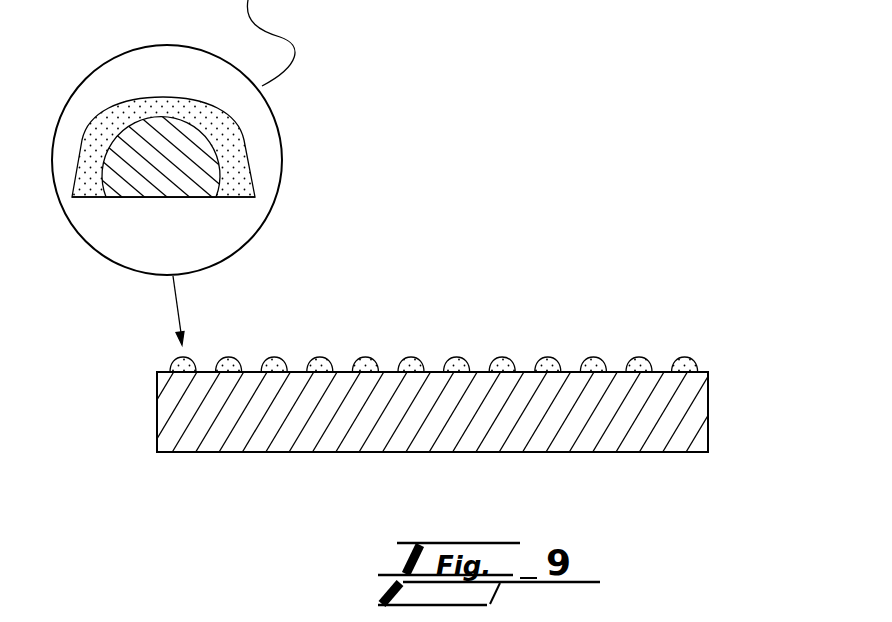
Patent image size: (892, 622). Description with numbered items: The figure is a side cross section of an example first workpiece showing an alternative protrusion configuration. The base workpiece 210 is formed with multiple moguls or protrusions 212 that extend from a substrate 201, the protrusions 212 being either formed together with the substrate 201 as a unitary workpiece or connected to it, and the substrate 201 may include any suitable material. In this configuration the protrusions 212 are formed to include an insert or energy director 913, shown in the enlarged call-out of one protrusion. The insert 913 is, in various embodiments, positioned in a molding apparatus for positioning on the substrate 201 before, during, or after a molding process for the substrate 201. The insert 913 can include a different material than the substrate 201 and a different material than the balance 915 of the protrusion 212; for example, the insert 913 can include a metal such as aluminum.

The substrate 201 is at (708, 405).
The base workpiece 210 is at (399, 287).
The protrusions 212 is at (359, 208).
The insert 913 is at (183, 213).
The balance of the protrusion 915 is at (235, 216).